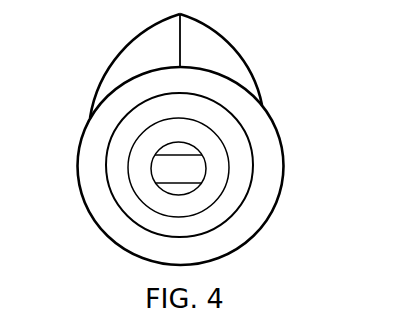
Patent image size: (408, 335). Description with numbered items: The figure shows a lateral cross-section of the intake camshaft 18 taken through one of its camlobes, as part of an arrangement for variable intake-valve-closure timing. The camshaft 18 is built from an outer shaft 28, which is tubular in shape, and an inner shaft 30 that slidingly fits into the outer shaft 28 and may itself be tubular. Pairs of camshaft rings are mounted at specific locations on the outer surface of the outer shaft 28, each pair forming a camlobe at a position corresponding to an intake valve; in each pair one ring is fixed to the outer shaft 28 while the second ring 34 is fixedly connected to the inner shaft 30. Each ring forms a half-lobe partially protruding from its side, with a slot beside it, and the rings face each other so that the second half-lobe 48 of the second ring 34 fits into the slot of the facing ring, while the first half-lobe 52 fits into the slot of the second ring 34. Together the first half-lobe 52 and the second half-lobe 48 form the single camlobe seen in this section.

The intake camshaft 18 is at (279, 95).
The outer shaft 28 is at (234, 186).
The inner shaft 30 is at (145, 185).
The second ring 34 is at (95, 132).
The second half-lobe 48 is at (138, 50).
The first half-lobe 52 is at (220, 55).